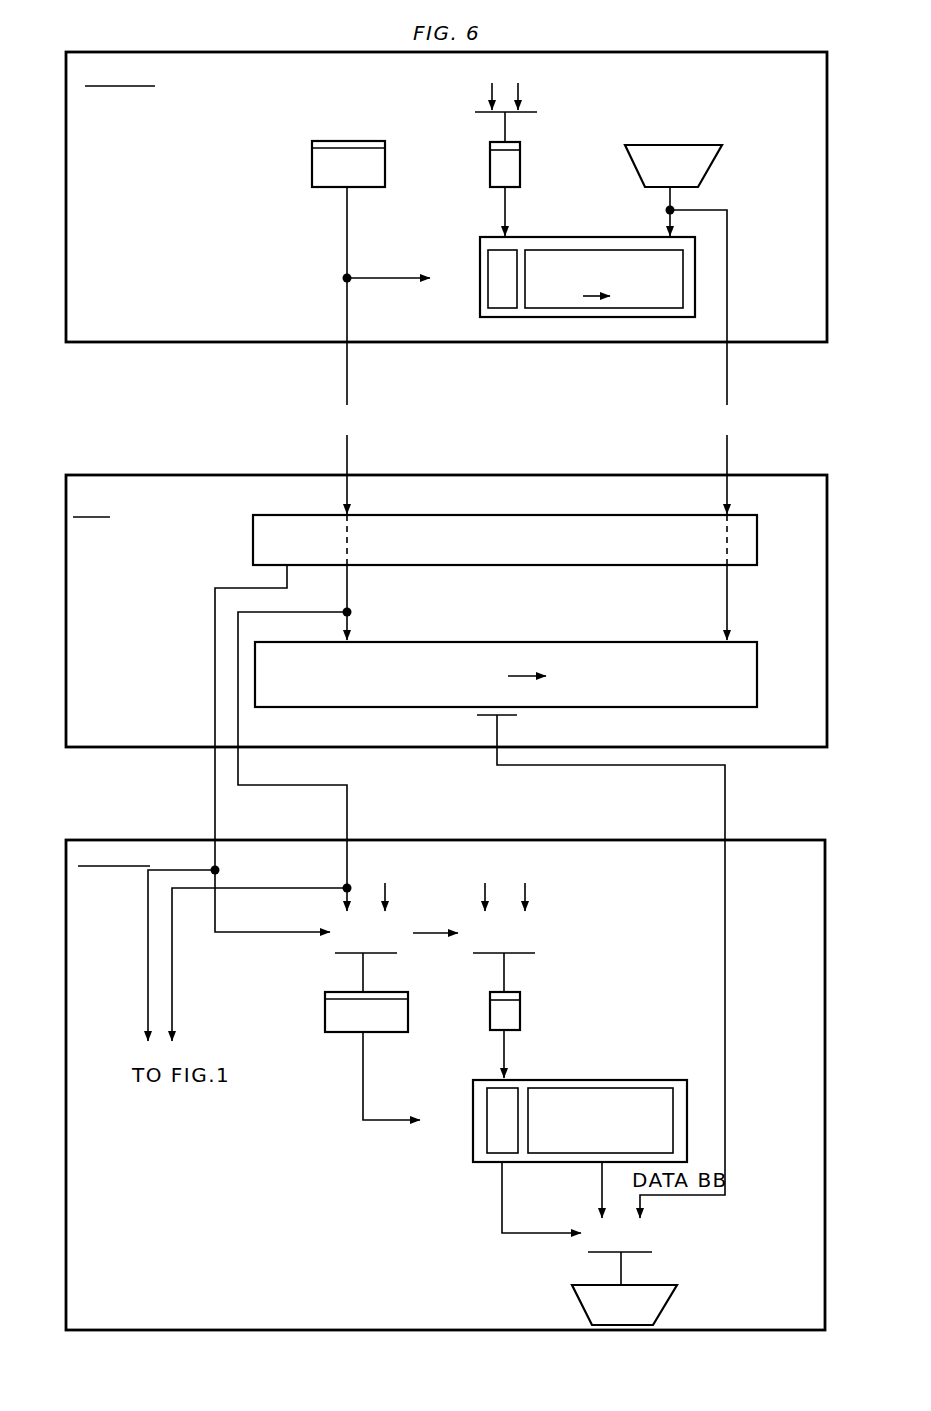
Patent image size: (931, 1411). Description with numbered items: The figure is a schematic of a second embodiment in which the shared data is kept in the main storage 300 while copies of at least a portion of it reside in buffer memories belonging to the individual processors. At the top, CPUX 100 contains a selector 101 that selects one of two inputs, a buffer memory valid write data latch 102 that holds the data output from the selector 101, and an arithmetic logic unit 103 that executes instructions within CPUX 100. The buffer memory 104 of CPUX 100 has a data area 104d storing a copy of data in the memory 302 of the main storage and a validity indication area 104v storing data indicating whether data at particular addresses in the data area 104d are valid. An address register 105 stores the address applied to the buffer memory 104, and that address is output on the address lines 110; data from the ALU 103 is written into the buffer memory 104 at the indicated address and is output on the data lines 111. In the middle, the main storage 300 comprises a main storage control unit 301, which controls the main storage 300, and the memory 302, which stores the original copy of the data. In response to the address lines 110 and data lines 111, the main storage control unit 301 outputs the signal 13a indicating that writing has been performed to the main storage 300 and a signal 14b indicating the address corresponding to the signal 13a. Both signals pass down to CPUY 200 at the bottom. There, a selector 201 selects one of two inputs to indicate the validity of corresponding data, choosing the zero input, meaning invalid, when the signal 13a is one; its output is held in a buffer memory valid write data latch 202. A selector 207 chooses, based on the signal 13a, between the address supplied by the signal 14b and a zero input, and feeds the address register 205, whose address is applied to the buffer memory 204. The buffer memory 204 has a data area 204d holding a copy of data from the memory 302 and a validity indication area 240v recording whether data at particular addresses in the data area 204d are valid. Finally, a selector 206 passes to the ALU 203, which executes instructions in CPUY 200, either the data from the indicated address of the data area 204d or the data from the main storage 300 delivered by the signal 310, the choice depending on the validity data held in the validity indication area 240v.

The CPUX 100 is at (157, 343).
The selector 101 is at (538, 109).
The buffer memory valid write data latch 102 is at (522, 173).
The arithmetic logic unit 103 is at (722, 150).
The buffer memory 104 is at (480, 240).
The validity indication area 104v is at (504, 318).
The data area 104d is at (668, 318).
The address register 105 is at (312, 162).
The address lines 110 is at (343, 366).
The data lines 111 is at (730, 372).
The main storage 300 is at (135, 749).
The main storage control unit 301 is at (760, 552).
The memory 302 is at (760, 665).
The signal 310 is at (725, 808).
The signal 13a is at (213, 822).
The signal 14b is at (350, 822).
The CPUY 200 is at (145, 1331).
The selector 201 is at (535, 953).
The buffer memory valid write data latch 202 is at (522, 1015).
The ALU 203 is at (677, 1300).
The buffer memory 204 is at (615, 1080).
The data area 204d is at (687, 1112).
The validity indication area 240v is at (483, 1154).
The address register 205 is at (325, 1012).
The selector 206 is at (655, 1255).
The selector 207 is at (335, 953).